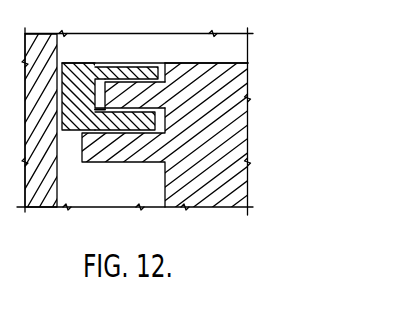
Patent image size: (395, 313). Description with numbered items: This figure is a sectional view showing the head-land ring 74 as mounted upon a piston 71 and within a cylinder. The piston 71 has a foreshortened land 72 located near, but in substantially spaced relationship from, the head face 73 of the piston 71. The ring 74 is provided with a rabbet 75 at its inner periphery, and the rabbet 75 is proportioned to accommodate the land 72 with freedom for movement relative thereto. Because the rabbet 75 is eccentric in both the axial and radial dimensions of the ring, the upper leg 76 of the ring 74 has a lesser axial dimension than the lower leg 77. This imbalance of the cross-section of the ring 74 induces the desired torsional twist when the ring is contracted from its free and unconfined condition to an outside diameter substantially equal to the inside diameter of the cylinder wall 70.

The cylinder wall 70 is at (89, 116).
The piston 71 is at (197, 121).
The foreshortened land 72 is at (197, 121).
The head face 73 is at (223, 68).
The head-land ring 74 is at (94, 100).
The rabbet 75 is at (100, 80).
The upper leg 76 is at (145, 72).
The lower leg 77 is at (120, 100).